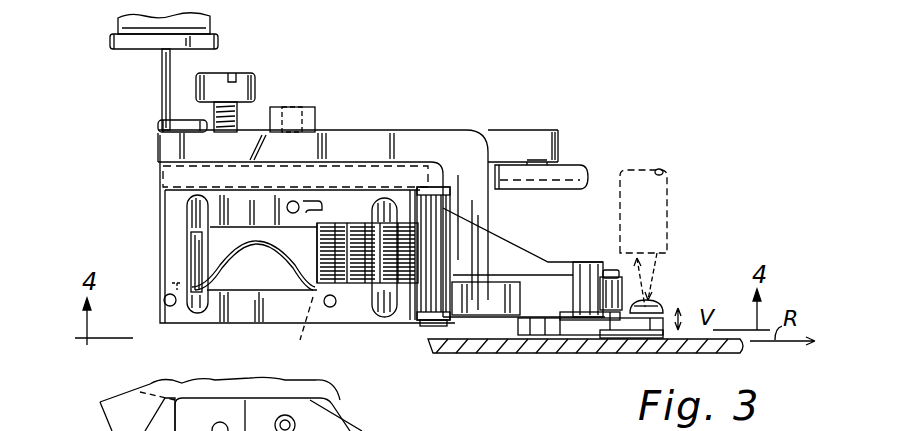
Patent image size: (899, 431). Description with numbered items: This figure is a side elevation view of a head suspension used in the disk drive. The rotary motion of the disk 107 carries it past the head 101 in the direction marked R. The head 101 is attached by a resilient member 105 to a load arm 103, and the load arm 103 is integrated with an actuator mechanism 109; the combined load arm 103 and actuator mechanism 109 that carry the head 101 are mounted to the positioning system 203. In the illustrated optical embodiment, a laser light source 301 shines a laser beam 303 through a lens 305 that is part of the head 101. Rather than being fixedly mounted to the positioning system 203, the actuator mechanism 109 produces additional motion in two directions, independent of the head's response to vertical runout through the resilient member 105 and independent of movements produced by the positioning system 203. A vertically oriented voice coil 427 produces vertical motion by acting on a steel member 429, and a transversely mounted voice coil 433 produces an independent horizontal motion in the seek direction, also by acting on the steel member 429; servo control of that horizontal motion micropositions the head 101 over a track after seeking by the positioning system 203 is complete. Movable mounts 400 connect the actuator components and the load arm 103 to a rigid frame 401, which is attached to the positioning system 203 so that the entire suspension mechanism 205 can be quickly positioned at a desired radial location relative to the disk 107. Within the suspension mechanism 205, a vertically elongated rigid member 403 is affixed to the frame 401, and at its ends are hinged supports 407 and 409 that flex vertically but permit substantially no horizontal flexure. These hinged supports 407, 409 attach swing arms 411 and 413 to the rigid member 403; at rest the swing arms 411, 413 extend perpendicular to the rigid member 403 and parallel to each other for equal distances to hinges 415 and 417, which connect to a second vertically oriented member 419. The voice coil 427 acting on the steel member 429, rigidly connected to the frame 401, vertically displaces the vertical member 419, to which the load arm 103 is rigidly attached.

The head 101 is at (582, 350).
The load arm 103 is at (515, 244).
The resilient member 105 is at (522, 345).
The disk 107 is at (657, 340).
The actuator mechanism 109 is at (313, 257).
The positioning system 203 is at (168, 166).
The suspension mechanism 205 is at (463, 117).
The laser light source 301 is at (638, 170).
The laser beam 303 is at (658, 262).
The lens 305 is at (658, 305).
The movable mounts 400 is at (160, 220).
The rigid frame 401 is at (158, 140).
The rigid member 403 is at (175, 254).
The hinged support 407 is at (190, 197).
The hinged support 409 is at (198, 318).
The swing arm 411 is at (287, 205).
The swing arm 413 is at (280, 292).
The hinge 415 is at (380, 200).
The hinge 417 is at (390, 318).
The second vertically oriented member 419 is at (407, 200).
The voice coil 427 is at (355, 293).
The steel member 429 is at (488, 210).
The voice coil 433 is at (437, 323).